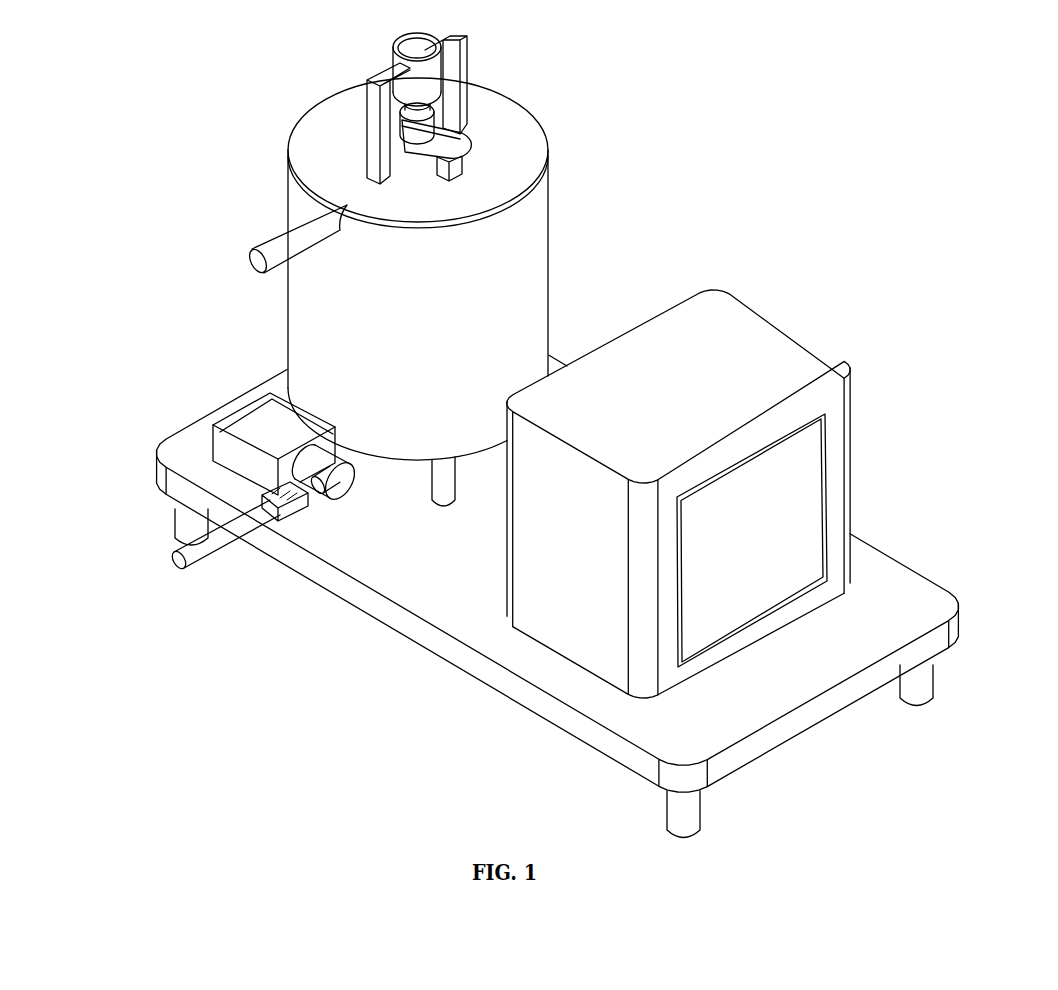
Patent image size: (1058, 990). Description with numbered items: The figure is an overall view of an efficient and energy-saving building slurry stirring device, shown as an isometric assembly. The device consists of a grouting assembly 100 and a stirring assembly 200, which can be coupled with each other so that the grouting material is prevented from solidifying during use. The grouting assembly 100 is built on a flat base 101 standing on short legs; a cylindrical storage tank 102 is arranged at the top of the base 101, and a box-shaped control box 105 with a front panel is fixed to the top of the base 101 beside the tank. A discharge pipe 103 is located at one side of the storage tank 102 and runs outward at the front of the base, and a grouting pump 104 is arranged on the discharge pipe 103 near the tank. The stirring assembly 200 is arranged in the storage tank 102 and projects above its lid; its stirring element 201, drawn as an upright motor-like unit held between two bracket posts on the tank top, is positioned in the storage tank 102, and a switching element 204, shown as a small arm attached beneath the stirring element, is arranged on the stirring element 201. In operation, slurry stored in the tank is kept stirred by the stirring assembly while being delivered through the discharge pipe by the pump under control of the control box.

The grouting assembly 100 is at (113, 547).
The base 101 is at (455, 578).
The storage tank 102 is at (445, 437).
The discharge pipe 103 is at (222, 540).
The grouting pump 104 is at (235, 455).
The control box 105 is at (548, 613).
The stirring assembly 200 is at (510, 42).
The stirring element 201 is at (427, 78).
The switching element 204 is at (443, 142).